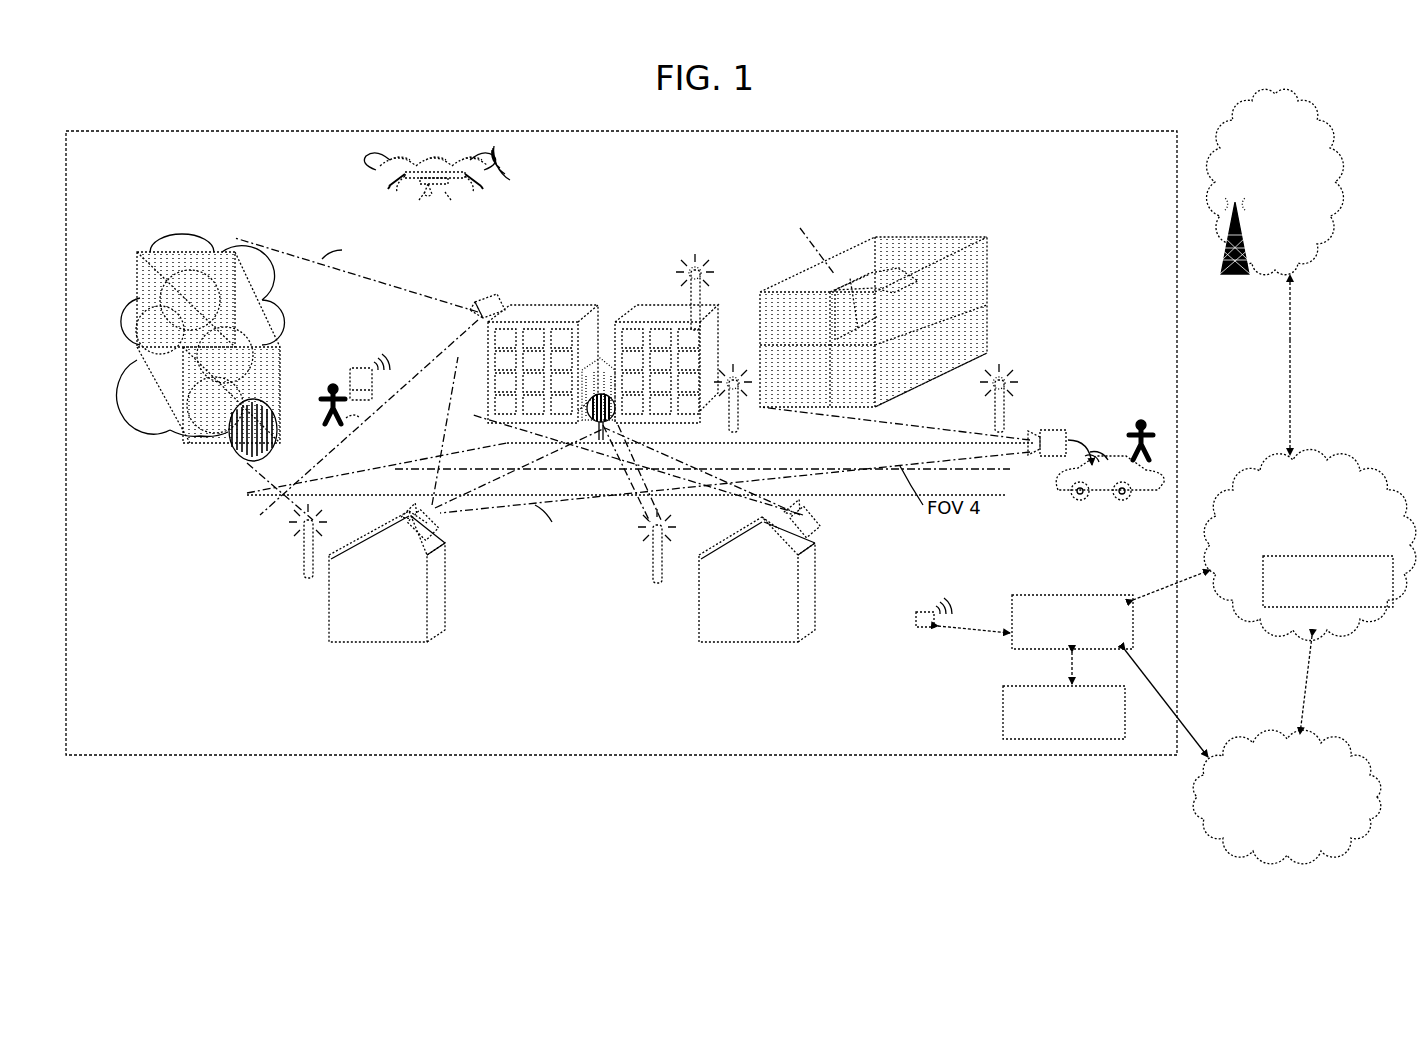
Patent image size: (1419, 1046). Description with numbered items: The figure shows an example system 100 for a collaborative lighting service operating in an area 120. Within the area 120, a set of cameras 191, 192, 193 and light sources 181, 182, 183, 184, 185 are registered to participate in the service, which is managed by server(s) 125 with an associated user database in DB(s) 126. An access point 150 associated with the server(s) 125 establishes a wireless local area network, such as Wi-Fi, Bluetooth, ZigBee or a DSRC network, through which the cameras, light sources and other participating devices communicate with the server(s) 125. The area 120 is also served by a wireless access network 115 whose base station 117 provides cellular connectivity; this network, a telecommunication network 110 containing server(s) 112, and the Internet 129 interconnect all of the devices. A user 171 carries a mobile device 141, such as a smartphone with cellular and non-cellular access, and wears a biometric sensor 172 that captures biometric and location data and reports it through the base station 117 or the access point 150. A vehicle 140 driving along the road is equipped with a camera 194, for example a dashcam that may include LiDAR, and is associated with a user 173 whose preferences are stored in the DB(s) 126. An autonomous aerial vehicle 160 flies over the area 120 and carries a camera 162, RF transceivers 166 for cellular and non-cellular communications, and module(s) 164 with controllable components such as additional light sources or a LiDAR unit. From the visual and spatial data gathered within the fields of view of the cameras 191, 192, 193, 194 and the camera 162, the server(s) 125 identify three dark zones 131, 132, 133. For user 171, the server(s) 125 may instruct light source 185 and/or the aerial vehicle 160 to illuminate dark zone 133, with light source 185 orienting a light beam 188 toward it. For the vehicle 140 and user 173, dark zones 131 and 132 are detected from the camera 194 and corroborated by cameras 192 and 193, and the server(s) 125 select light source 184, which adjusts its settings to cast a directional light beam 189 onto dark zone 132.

The system 100 is at (207, 110).
The area 120 is at (1080, 131).
The autonomous aerial vehicle (AAV) 160 is at (385, 168).
The camera 162 is at (405, 188).
The module(s) 164 is at (432, 198).
The radio frequency (RF) transceivers 166 is at (458, 195).
The dark zone 133 is at (222, 252).
The dark zone 132 is at (605, 360).
The dark zone 131 is at (940, 235).
The mobile device 141 is at (356, 368).
The biometric sensor 172 is at (328, 395).
The user 171 is at (346, 420).
The camera 191 is at (495, 298).
The light source 182 is at (697, 256).
The light source 183 is at (735, 368).
The light source 181 is at (1003, 372).
The camera 194 is at (1052, 428).
The vehicle 140 is at (1095, 455).
The user 173 is at (1152, 434).
The directional light beam 189 is at (614, 420).
The light beam 188 is at (232, 470).
The camera 193 is at (438, 529).
The camera 192 is at (820, 521).
The light source 185 is at (306, 578).
The light source 184 is at (655, 583).
The access point 150 is at (928, 628).
The server(s) 125 is at (1054, 640).
The DB(s) 126 is at (1046, 731).
The base station 117 is at (1252, 275).
The wireless access network 115 is at (1260, 207).
The telecommunication network 110 is at (1305, 550).
The server(s) 112 is at (1311, 605).
The Internet 129 is at (1270, 825).